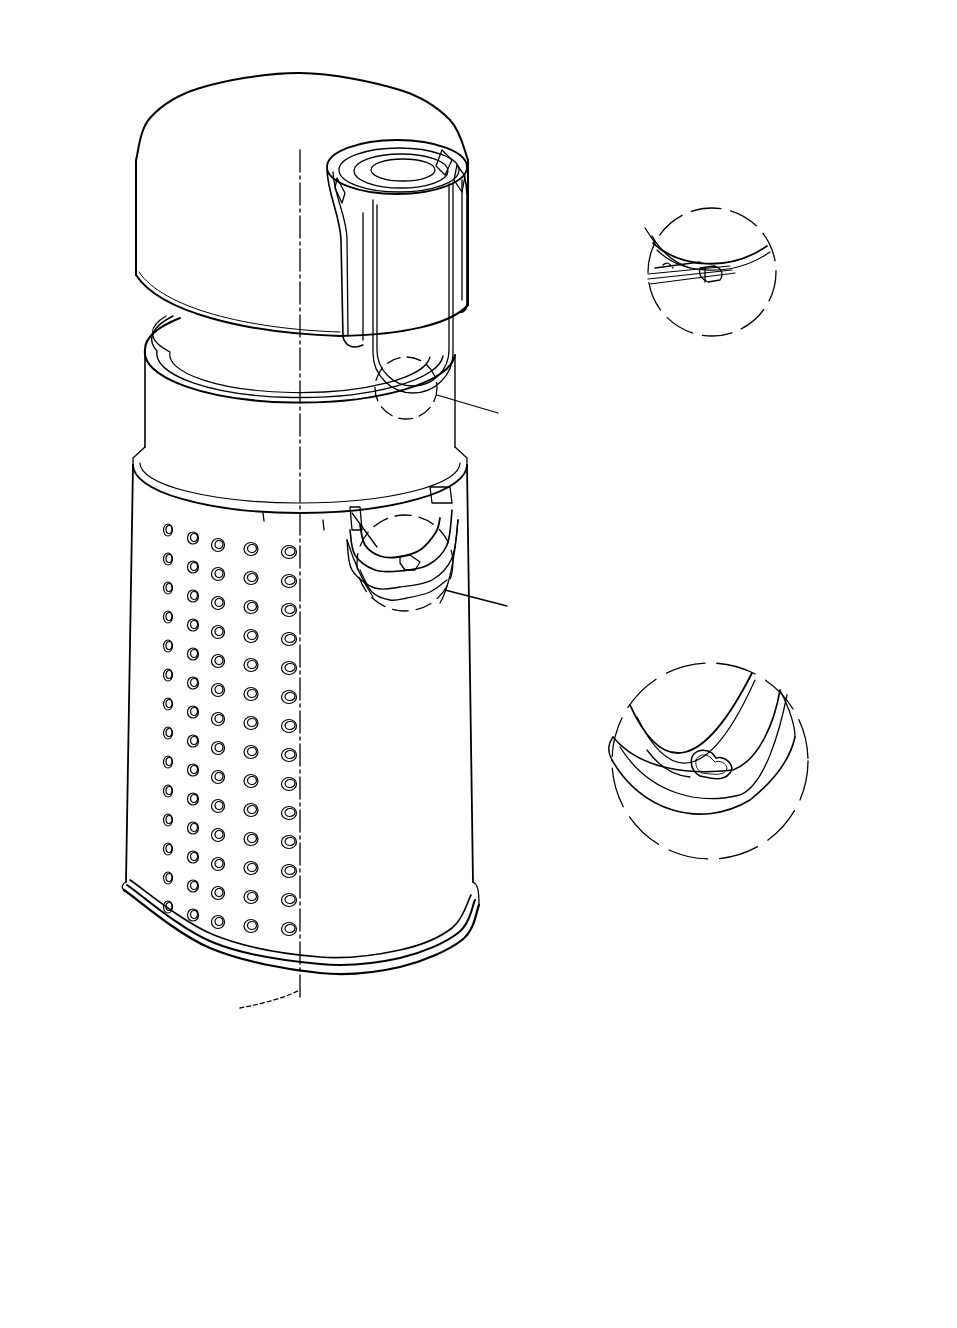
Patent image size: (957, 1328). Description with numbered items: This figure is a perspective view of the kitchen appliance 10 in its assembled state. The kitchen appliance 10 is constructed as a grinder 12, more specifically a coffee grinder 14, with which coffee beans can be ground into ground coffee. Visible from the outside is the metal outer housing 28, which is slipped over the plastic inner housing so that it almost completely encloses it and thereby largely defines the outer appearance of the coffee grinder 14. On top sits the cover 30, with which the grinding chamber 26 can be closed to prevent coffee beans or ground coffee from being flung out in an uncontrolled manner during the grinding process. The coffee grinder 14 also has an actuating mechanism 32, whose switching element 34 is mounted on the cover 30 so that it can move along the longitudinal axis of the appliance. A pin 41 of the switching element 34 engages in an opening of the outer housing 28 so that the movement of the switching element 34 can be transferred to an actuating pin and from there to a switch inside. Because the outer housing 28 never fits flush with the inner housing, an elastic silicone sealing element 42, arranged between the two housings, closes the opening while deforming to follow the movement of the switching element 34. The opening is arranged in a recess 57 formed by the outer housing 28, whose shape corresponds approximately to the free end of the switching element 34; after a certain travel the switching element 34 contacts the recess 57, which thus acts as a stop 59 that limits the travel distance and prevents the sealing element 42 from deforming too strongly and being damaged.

The kitchen appliance 10 is at (462, 626).
The grinder 12 is at (462, 626).
The coffee grinder 14 is at (542, 95).
The grinding chamber 26 is at (207, 350).
The outer housing 28 is at (142, 730).
The cover 30 is at (210, 100).
The actuating mechanism 32 is at (596, 266).
The switching element 34 is at (440, 318).
The pin 41 is at (716, 278).
The sealing element 42 is at (708, 765).
The recess 57 is at (462, 541).
The stop 59 is at (438, 530).